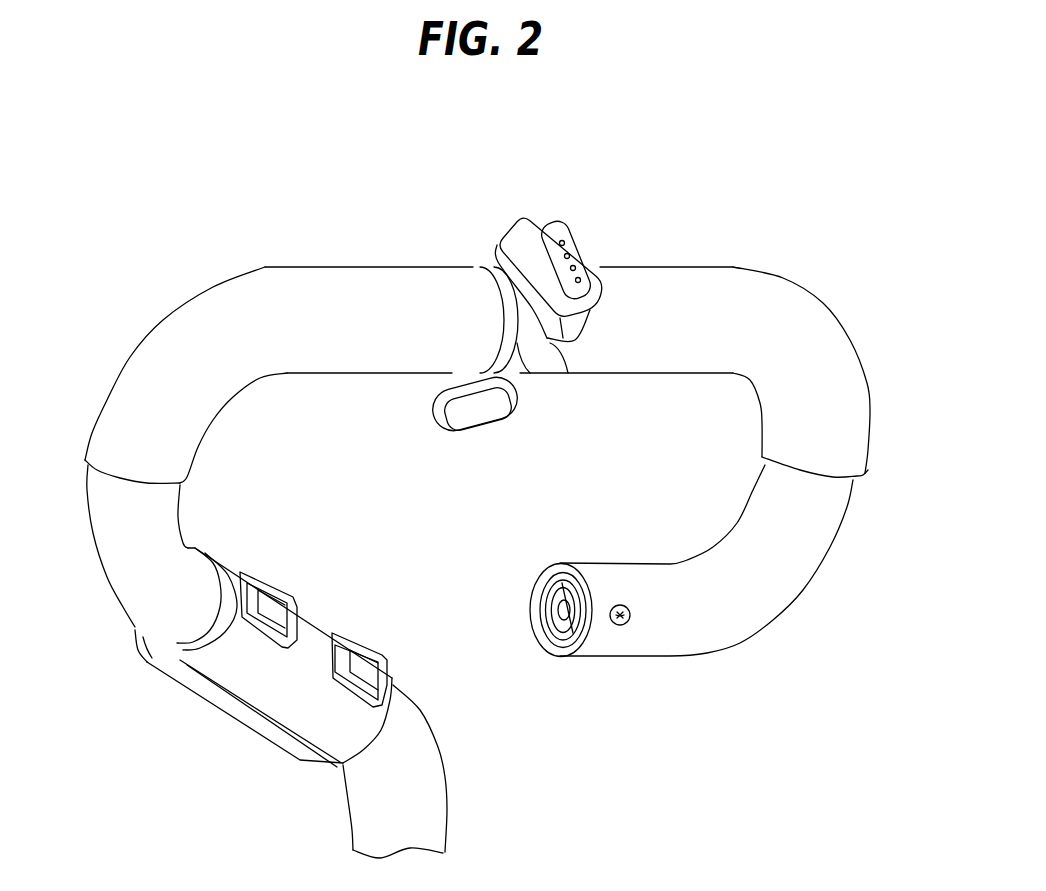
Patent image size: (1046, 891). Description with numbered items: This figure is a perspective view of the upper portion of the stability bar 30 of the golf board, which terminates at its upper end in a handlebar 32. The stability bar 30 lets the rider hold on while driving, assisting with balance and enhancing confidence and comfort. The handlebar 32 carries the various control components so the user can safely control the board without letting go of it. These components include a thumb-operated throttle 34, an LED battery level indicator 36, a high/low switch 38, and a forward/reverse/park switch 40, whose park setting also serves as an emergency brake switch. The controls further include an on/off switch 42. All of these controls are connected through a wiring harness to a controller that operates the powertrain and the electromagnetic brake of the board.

The stability bar 30 is at (420, 825).
The handlebar 32 is at (826, 272).
The thumb-operated throttle 34 is at (484, 416).
The LED battery level indicator 36 is at (570, 242).
The high/low switch 38 is at (365, 667).
The forward/reverse/park switch 40 is at (270, 607).
The on/off switch 42 is at (560, 333).